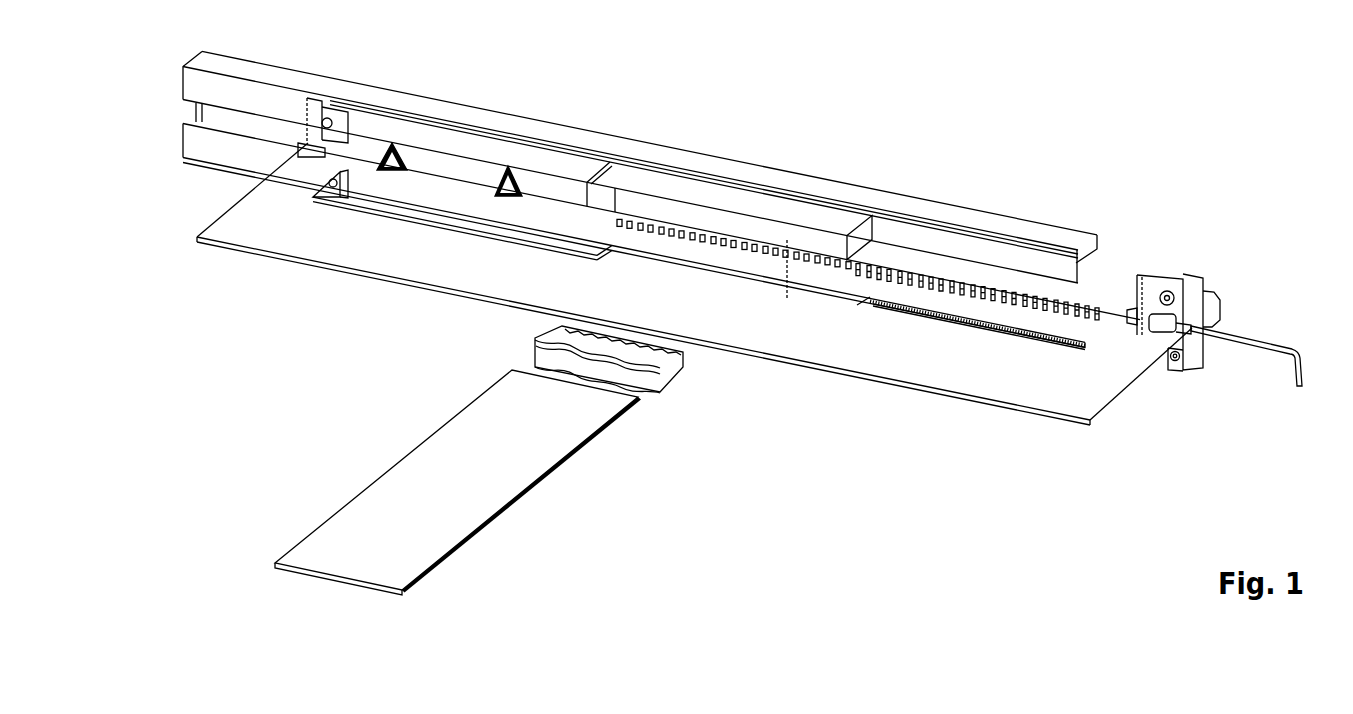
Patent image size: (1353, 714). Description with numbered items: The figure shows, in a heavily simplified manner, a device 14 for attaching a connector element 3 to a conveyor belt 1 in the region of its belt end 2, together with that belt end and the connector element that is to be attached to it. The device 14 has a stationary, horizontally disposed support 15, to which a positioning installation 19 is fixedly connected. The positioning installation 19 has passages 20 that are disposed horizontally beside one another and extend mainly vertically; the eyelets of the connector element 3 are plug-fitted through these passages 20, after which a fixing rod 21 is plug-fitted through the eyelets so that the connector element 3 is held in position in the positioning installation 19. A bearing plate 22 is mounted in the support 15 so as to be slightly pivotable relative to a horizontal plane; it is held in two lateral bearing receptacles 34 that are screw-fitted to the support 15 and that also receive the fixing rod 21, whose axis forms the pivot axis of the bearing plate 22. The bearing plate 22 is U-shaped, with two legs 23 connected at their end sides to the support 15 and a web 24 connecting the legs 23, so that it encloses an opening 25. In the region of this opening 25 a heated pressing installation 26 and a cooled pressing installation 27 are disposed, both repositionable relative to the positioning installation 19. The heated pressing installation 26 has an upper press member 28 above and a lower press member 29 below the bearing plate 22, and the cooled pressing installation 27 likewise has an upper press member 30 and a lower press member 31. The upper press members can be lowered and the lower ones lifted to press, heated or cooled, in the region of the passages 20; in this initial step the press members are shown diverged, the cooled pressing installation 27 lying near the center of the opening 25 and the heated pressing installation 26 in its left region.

The conveyor belt 1 is at (513, 460).
The belt end 2 is at (325, 545).
The connector element 3 is at (697, 391).
The device 14 is at (929, 79).
The support 15 is at (313, 97).
The positioning installation 19 is at (976, 311).
The passages 20 is at (1094, 301).
The fixing rod 21 is at (1258, 342).
The bearing plate 22 is at (661, 275).
The legs 23 is at (300, 180).
The web 24 is at (425, 265).
The opening 25 is at (320, 198).
The heated pressing installation 26 is at (527, 131).
The cooled pressing installation 27 is at (727, 178).
The press member 28 is at (432, 138).
The press member 29 is at (485, 220).
The press member 30 is at (835, 215).
The press member 31 is at (800, 287).
The bearing receptacles 34 is at (328, 120).